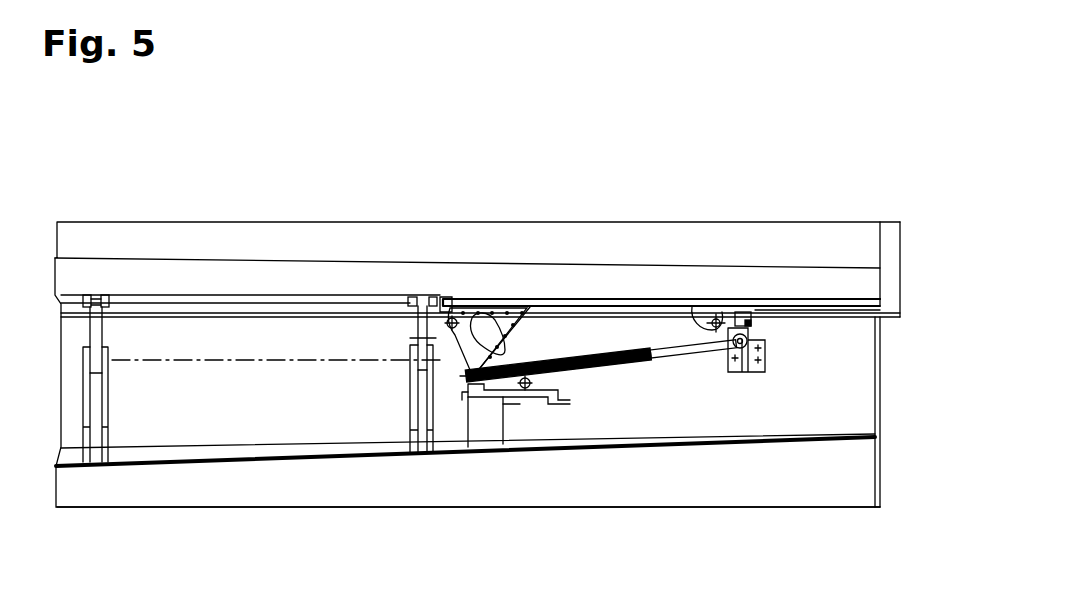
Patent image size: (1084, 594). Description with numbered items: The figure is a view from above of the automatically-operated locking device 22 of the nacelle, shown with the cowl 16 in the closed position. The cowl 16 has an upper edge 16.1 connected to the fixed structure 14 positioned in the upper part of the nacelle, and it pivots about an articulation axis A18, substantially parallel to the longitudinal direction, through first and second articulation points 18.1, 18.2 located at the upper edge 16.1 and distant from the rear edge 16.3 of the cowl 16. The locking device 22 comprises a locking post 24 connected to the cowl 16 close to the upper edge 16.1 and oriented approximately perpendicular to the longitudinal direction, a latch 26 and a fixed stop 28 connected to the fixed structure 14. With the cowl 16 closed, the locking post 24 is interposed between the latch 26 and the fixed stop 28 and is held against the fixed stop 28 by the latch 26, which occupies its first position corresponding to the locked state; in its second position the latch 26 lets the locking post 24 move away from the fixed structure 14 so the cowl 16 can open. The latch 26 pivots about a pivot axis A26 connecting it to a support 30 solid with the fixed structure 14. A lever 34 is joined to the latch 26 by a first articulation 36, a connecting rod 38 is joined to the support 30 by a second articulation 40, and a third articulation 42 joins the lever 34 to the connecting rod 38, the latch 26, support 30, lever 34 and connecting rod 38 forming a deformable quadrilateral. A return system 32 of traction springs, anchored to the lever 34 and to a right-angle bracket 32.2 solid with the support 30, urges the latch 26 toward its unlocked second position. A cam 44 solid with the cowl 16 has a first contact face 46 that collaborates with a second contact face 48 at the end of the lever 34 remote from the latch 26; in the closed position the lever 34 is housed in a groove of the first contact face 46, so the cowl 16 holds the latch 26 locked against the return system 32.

The fixed structure 14 is at (731, 267).
The cowl 16 is at (822, 418).
The upper edge 16.1 is at (778, 334).
The rear edge 16.3 is at (872, 476).
The first articulation point 18.1 is at (98, 366).
The second articulation point 18.2 is at (410, 362).
The articulation axis A18 is at (205, 360).
The automatically-operated locking device 22 is at (628, 404).
The locking post 24 is at (765, 299).
The latch 26 is at (774, 318).
The pivot axis A26 is at (716, 322).
The fixed stop 28 is at (759, 321).
The support 30 is at (574, 296).
The return system 32 is at (577, 373).
The right-angle bracket 32.2 is at (412, 340).
The lever 34 is at (688, 358).
The first articulation 36 is at (730, 354).
The connecting rod 38 is at (485, 331).
The second articulation 40 is at (438, 304).
The third articulation 42 is at (529, 394).
The cam 44 is at (480, 432).
The first contact face 46 is at (458, 396).
The second contact face 48 is at (508, 405).